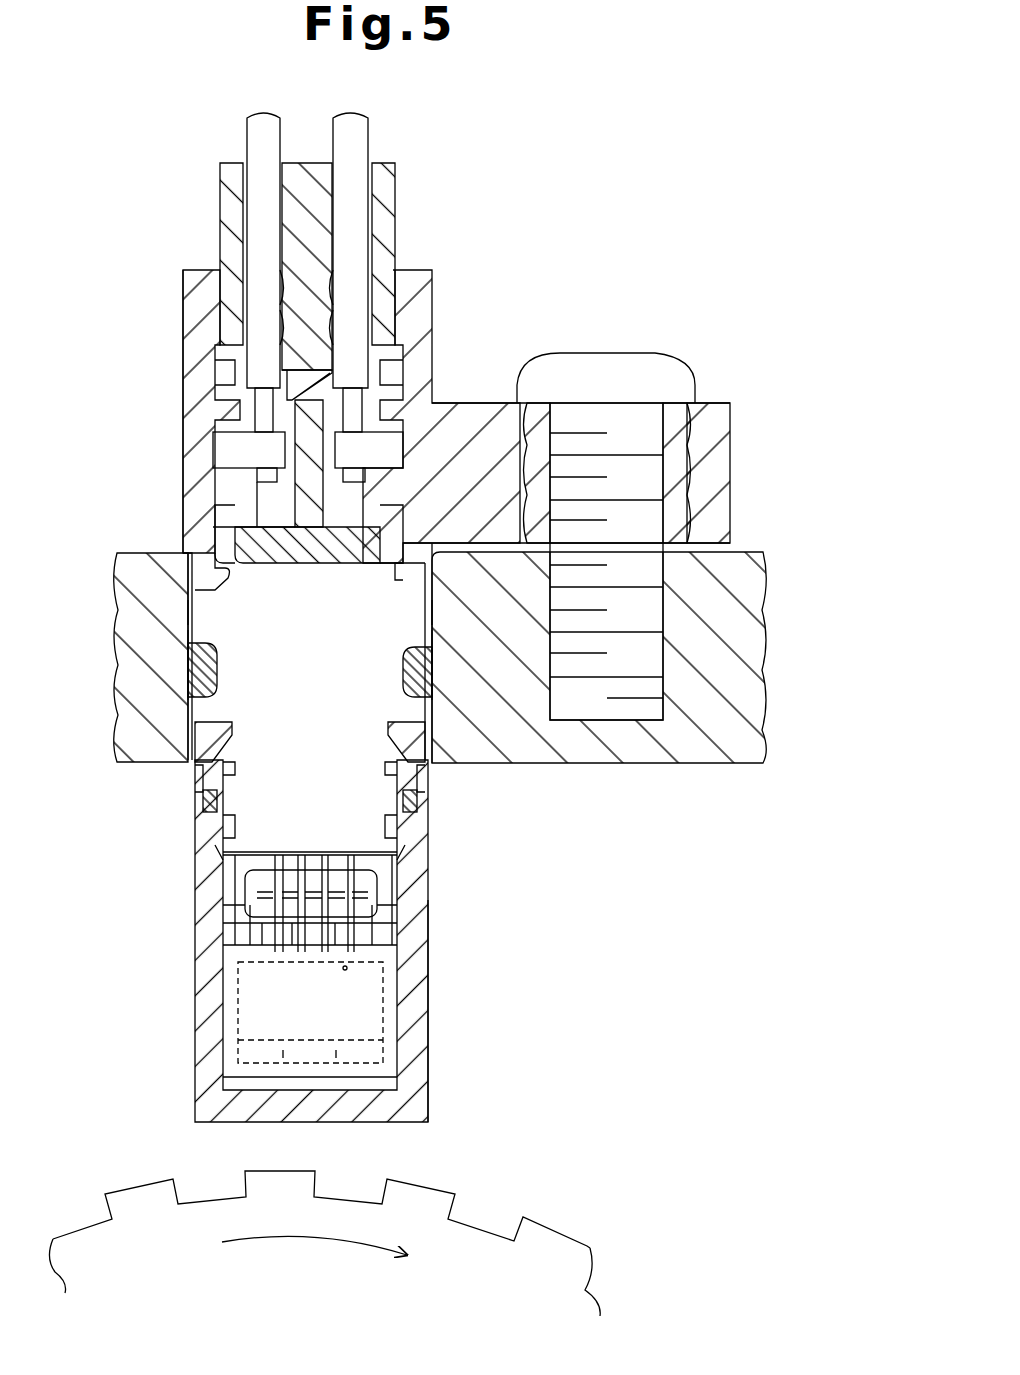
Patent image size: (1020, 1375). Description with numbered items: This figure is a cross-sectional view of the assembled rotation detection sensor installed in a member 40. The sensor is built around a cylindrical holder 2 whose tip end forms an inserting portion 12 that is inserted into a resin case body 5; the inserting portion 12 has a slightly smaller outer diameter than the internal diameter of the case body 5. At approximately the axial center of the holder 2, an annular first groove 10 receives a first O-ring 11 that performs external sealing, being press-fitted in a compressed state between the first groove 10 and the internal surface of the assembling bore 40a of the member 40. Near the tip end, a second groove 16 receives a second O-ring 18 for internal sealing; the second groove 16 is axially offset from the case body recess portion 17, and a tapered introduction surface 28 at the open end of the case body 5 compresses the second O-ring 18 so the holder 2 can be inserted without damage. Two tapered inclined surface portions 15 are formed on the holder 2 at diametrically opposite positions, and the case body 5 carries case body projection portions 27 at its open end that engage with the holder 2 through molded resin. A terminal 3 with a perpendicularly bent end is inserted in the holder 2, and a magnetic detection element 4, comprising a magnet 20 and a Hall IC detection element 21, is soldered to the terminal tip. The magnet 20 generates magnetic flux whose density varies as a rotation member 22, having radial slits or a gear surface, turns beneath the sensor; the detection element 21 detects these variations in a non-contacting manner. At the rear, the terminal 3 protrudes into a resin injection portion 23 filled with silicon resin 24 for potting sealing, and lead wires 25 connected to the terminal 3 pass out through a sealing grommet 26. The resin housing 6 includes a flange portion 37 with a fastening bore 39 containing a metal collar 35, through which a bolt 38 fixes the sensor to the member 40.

The holder 2 is at (188, 584).
The terminal 3 is at (215, 432).
The magnetic detection element 4 is at (428, 968).
The case body 5 is at (428, 1020).
The housing 6 is at (183, 348).
The first groove 10 is at (188, 680).
The first O-ring 11 is at (219, 665).
The inserting portion 12 is at (420, 845).
The inclined surface portions 15 is at (232, 742).
The second groove 16 is at (236, 826).
The case body recess portion 17 is at (203, 805).
The second O-ring 18 is at (217, 850).
The magnet 20 is at (245, 1025).
The detection element 21 is at (308, 1082).
The rotation member 22 is at (482, 1230).
The resin injection portion 23 is at (230, 510).
The silicon resin 24 is at (235, 558).
The lead wires 25 is at (247, 135).
The grommet 26 is at (300, 163).
The case body projection portions 27 is at (195, 775).
The tapered introduction surface 28 is at (235, 772).
The collar 35 is at (520, 408).
The flange portion 37 is at (490, 404).
The bolt 38 is at (612, 355).
The fastening bore 39 is at (700, 478).
The member 40 is at (120, 740).
The assembling bore 40a is at (188, 612).